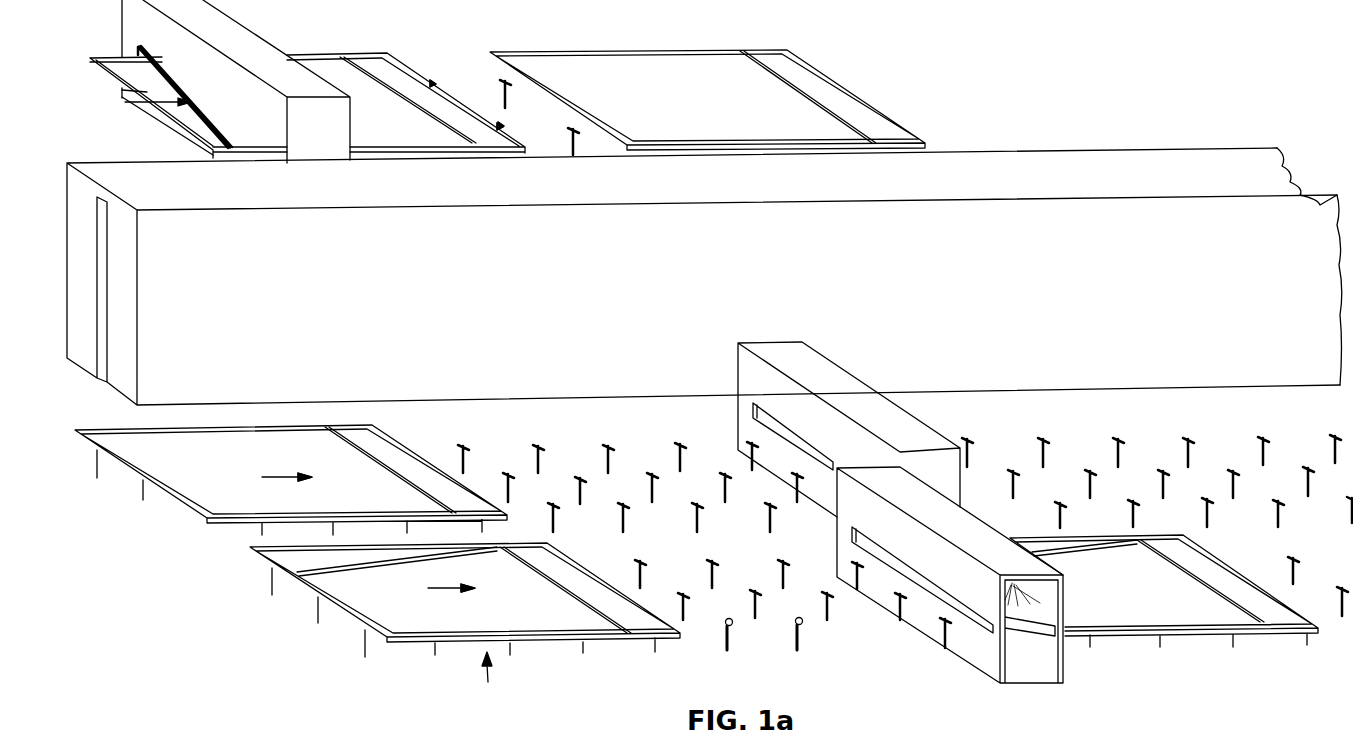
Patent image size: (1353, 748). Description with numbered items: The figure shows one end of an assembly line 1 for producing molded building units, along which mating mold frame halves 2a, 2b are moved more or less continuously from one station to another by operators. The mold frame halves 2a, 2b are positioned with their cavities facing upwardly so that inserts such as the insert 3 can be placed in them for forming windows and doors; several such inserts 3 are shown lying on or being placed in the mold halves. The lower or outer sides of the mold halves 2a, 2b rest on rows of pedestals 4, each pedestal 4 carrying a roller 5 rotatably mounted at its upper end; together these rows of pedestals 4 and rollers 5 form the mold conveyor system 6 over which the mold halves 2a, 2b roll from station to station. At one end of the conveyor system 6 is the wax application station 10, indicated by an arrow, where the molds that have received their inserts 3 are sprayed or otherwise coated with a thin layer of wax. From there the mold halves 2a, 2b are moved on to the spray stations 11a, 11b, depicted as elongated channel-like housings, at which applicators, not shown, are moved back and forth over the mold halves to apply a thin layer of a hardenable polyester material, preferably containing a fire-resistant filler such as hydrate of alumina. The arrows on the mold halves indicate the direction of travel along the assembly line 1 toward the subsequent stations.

The assembly line 1 is at (1232, 422).
The mold frame half 2a is at (212, 470).
The mold frame half 2b is at (470, 626).
The insert 3 is at (390, 475).
The pedestal 4 is at (580, 480).
The roller 5 is at (607, 445).
The mold conveyor system 6 is at (842, 655).
The wax application station 10 is at (495, 682).
The spray station 11a is at (838, 363).
The spray station 11b is at (1065, 590).